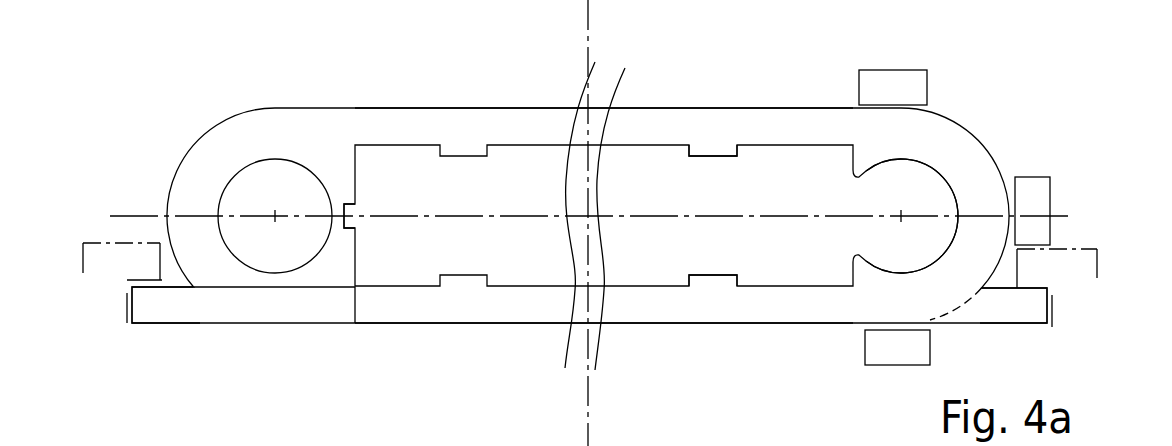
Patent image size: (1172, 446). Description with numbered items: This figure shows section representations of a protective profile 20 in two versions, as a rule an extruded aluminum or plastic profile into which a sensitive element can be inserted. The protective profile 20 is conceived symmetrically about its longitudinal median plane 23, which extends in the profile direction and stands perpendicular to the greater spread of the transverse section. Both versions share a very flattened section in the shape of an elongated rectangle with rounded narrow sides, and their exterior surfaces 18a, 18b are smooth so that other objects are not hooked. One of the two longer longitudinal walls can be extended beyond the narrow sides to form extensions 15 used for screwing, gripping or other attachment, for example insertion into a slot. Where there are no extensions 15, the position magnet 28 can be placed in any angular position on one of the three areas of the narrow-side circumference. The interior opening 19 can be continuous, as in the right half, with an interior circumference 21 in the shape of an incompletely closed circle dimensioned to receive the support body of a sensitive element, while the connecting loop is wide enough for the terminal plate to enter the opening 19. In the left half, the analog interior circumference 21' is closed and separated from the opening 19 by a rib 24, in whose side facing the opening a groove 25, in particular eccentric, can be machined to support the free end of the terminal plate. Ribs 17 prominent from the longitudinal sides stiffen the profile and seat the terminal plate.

The extensions 15 is at (589, 306).
The ribs 17 is at (715, 147).
The exterior surface 18a is at (612, 108).
The exterior surface 18b is at (610, 325).
The interior opening 19 is at (651, 215).
The protective profile 20 is at (275, 335).
The interior circumference 21 is at (996, 190).
The interior circumference 21' is at (212, 175).
The longitudinal median plane 23 is at (567, 347).
The rib 24 is at (328, 267).
The groove 25 is at (351, 207).
The position magnet 28 is at (954, 217).